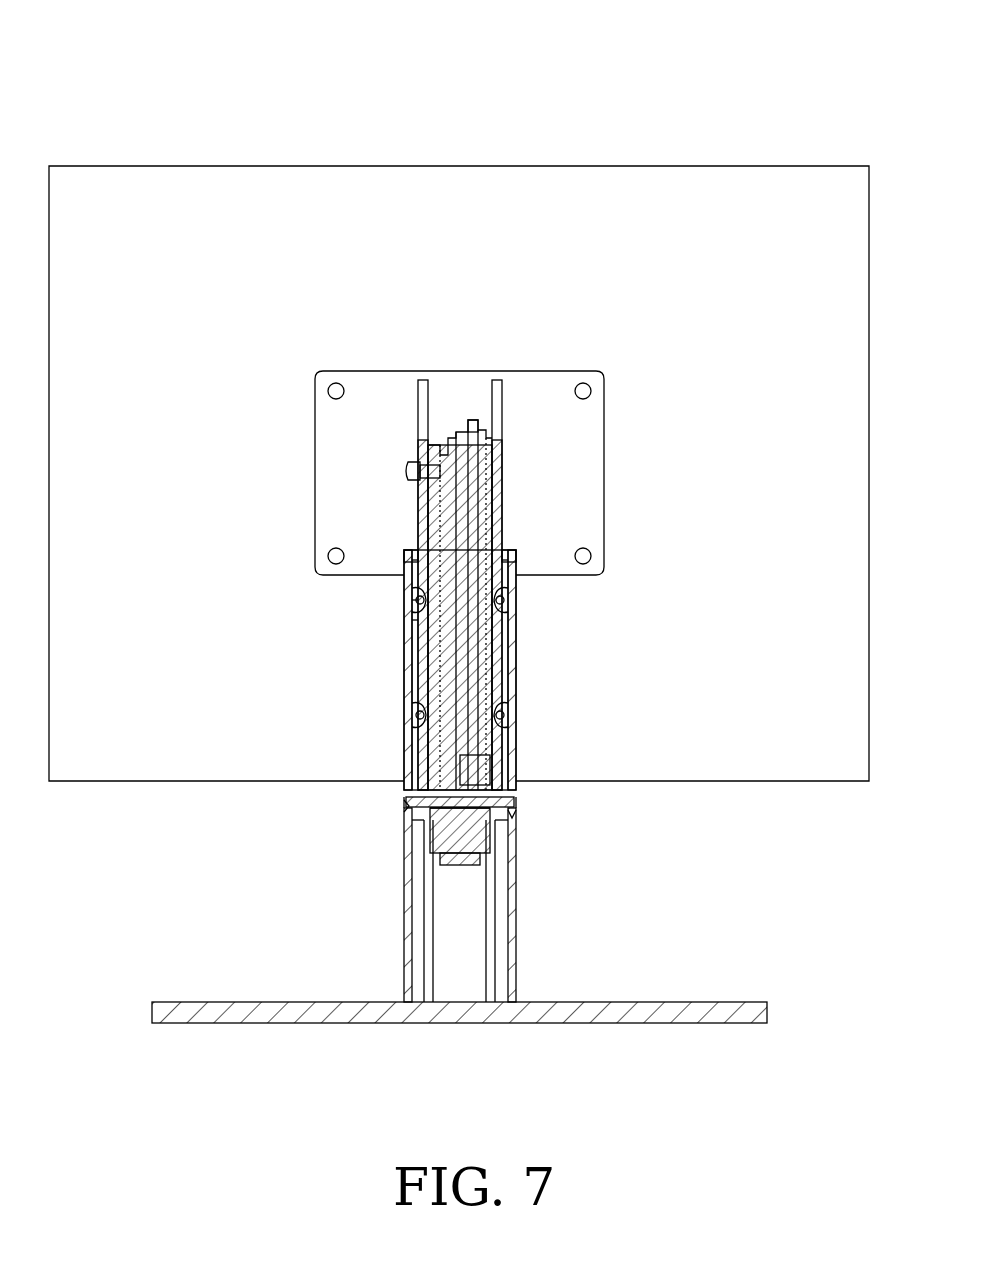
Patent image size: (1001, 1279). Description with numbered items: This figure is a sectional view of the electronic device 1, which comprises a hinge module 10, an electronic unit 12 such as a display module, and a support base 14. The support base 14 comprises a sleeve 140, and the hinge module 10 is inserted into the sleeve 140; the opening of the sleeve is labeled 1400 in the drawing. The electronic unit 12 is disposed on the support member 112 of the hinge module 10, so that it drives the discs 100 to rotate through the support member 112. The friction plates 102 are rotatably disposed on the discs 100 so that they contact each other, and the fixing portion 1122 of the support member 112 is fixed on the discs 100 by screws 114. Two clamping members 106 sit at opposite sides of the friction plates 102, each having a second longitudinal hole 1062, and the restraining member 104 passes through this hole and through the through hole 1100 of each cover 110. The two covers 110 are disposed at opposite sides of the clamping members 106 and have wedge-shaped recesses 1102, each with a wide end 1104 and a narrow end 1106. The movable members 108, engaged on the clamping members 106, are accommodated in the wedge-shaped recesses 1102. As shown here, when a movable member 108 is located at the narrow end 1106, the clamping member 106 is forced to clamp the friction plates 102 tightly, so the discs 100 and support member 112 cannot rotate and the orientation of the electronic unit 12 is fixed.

The electronic device 1 is at (165, 72).
The electronic unit 12 is at (780, 167).
The support base 14 is at (750, 1002).
The hinge module 10 is at (458, 418).
The discs 100 is at (478, 462).
The friction plates 102 is at (472, 420).
The restraining member 104 is at (517, 800).
The clamping members 106 is at (428, 695).
The second longitudinal hole 1062 is at (420, 828).
The movable members 108 is at (407, 592).
The covers 110 is at (418, 750).
The through hole 1100 is at (410, 808).
The wedge-shaped recesses 1102 is at (412, 604).
The wide end 1104 is at (408, 580).
The narrow end 1106 is at (412, 622).
The support member 112 is at (580, 372).
The fixing portion 1122 is at (500, 765).
The screws 114 is at (410, 470).
The sleeve 140 is at (516, 945).
The tube opening 1400 is at (516, 822).